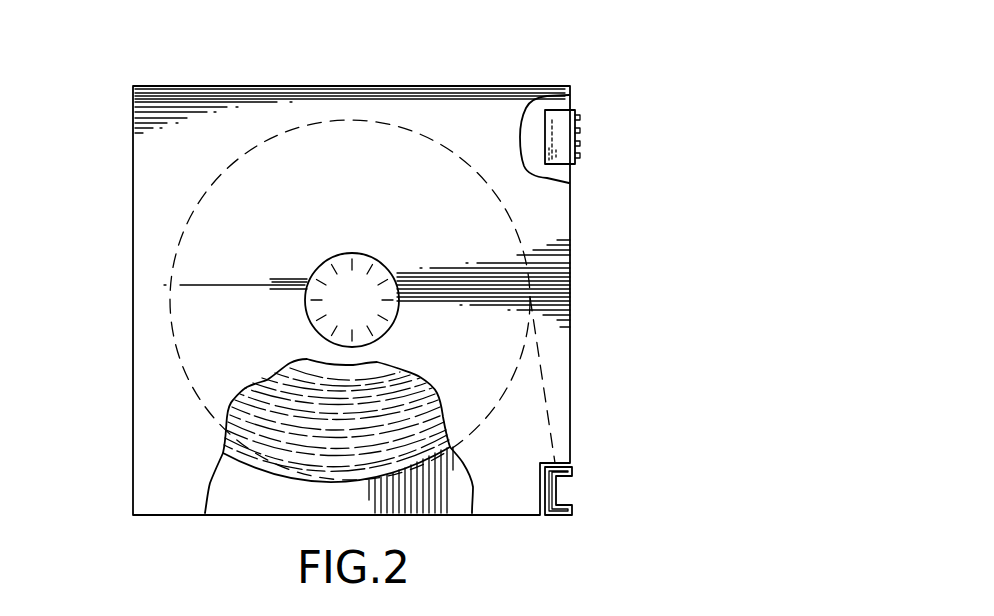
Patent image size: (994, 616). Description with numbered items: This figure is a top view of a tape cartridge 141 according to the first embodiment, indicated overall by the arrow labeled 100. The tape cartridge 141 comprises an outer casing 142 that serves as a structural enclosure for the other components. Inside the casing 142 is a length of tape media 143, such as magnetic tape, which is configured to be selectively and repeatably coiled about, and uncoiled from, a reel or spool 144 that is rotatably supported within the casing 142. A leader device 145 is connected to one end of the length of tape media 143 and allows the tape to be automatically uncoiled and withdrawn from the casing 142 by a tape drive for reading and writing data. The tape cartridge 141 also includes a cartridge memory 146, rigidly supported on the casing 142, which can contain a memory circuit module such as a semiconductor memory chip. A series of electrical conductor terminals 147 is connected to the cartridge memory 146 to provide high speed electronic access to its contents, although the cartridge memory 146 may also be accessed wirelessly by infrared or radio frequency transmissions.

The disk cartridge 100 is at (560, 38).
The tape cartridge 141 is at (252, 74).
The outer casing 142 is at (133, 225).
The length of tape media 143 is at (310, 480).
The reel or spool 144 is at (386, 267).
The leader device 145 is at (557, 516).
The cartridge memory 146 is at (572, 184).
The electrical conductor terminals 147 is at (581, 117).